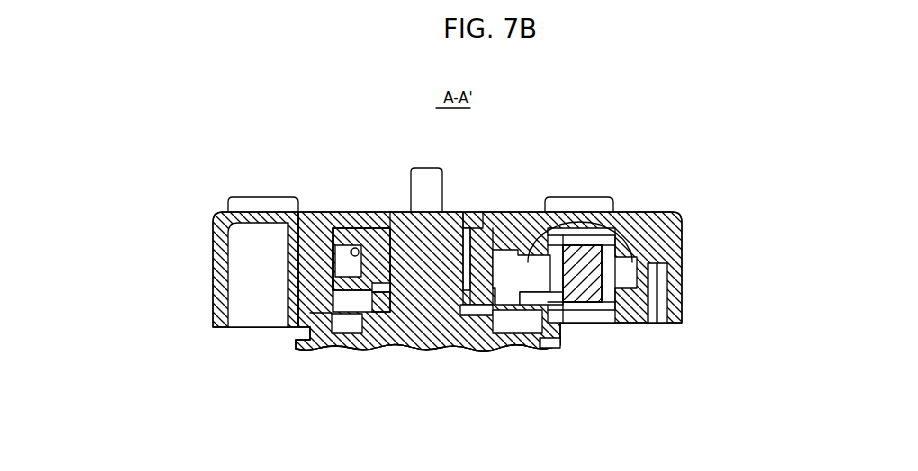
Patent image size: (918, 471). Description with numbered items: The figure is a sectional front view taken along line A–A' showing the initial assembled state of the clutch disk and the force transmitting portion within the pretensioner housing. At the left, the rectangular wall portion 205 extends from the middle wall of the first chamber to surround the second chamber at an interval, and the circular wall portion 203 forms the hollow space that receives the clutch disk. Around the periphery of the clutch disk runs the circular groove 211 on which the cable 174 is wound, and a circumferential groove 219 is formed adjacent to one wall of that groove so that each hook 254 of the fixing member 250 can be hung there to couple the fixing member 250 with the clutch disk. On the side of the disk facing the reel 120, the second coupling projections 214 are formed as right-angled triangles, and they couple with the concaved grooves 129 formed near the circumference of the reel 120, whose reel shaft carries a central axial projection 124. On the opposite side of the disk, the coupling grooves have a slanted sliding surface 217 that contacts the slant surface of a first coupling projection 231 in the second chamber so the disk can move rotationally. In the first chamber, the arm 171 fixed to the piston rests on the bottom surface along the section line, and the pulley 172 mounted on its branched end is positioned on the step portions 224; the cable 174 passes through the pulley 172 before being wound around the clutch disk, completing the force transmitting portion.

The reel 120 is at (355, 356).
The axial projection 124 is at (410, 170).
The concaved grooves 129 is at (514, 320).
The arm 171 is at (646, 211).
The pulley 172 is at (588, 214).
The cable 174 is at (350, 225).
The circular wall portion 203 is at (288, 212).
The rectangular wall portion 205 is at (210, 247).
The circular groove 211 is at (345, 285).
The second coupling projections 214 is at (540, 348).
The sliding surface 217 is at (525, 265).
The circumferential groove 219 is at (480, 258).
The step portions 224 is at (547, 212).
The first coupling projections 231 is at (475, 245).
The fixing member 250 is at (479, 209).
The hooks 254 is at (468, 252).